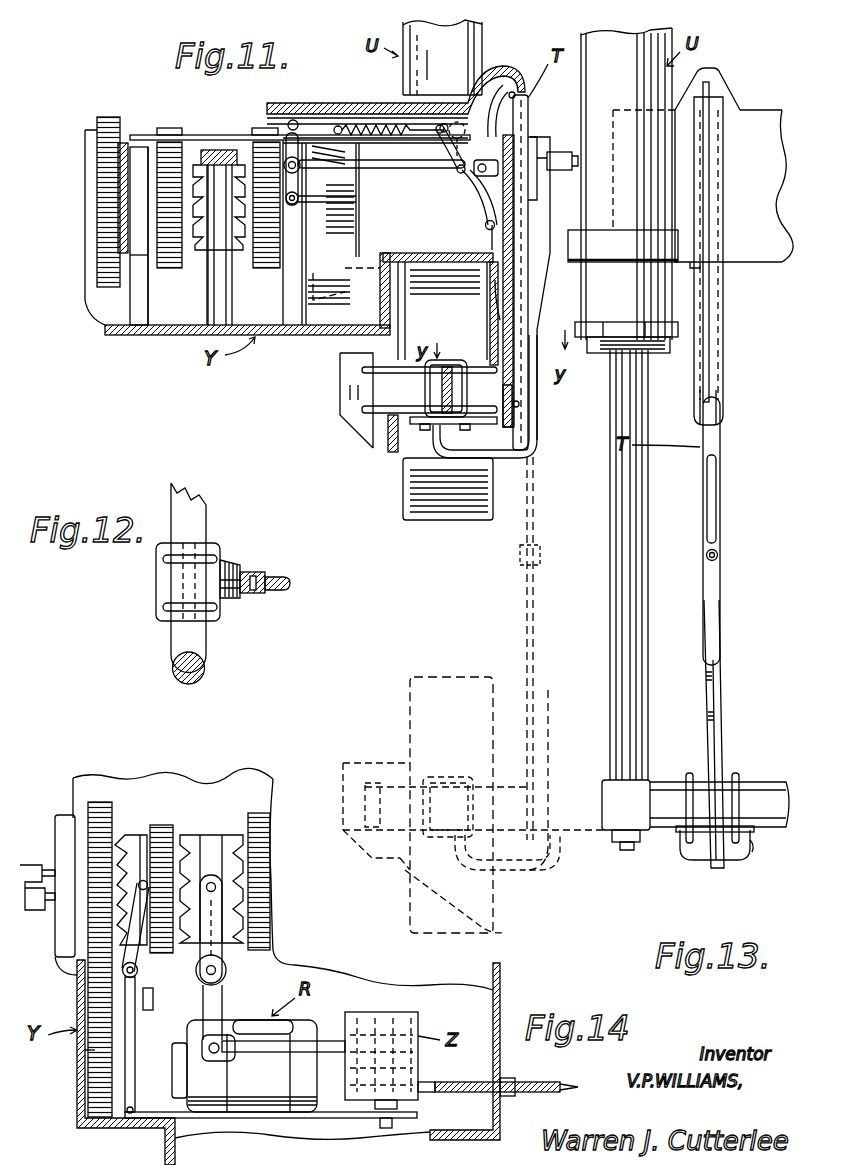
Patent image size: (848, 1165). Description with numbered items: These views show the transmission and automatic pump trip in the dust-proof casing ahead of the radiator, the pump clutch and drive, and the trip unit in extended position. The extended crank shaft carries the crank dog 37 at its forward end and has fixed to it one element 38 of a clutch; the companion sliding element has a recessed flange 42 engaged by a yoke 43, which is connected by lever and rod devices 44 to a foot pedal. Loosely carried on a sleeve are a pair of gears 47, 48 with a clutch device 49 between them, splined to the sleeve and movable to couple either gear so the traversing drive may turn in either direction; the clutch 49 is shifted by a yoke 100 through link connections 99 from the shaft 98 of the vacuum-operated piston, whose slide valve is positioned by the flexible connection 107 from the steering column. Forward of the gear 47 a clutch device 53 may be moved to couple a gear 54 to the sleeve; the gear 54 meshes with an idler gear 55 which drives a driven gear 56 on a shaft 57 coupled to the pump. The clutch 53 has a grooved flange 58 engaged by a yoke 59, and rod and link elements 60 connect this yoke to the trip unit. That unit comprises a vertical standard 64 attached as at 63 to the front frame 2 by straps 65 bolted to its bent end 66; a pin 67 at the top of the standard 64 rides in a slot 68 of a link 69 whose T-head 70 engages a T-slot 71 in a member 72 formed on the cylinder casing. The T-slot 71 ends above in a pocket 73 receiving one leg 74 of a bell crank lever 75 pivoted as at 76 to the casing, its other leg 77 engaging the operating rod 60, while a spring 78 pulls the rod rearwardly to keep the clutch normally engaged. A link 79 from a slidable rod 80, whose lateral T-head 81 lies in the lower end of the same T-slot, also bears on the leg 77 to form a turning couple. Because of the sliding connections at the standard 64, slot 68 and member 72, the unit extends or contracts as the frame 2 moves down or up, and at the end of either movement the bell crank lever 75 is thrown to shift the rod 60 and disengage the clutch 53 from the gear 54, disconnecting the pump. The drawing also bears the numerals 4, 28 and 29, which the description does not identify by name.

In FIG. 11, the front frame 2 is at (445, 387).
In FIG. 12, the front frame 2 is at (202, 520).
In FIG. 13, the front frame 2 is at (473, 853).
In FIG. 11, the box 4 is at (452, 522).
In FIG. 13, the box 4 is at (462, 680).
In FIG. 13, the nut 28 is at (622, 852).
In FIG. 13, the column 29 is at (623, 404).
In FIG. 14, the crank dog 37 is at (30, 865).
In FIG. 11, the clutch element 38 is at (359, 200).
In FIG. 11, the recessed flange 42 is at (358, 225).
In FIG. 11, the yoke 43 is at (300, 181).
In FIG. 11, the lever and rod devices 44 is at (410, 168).
In FIG. 11, the gear 47 is at (167, 135).
In FIG. 14, the gear 47 is at (163, 825).
In FIG. 11, the gear 48 is at (268, 268).
In FIG. 14, the gear 48 is at (271, 832).
In FIG. 11, the clutch device 49 is at (215, 255).
In FIG. 14, the clutch device 49 is at (205, 835).
In FIG. 11, the clutch device 53 is at (125, 143).
In FIG. 14, the clutch device 53 is at (133, 905).
In FIG. 11, the gear 54 is at (102, 117).
In FIG. 14, the gear 54 is at (100, 802).
In FIG. 14, the idler gear 55 is at (88, 1000).
In FIG. 14, the driven gear 56 is at (100, 1075).
In FIG. 14, the shaft 57 is at (160, 1065).
In FIG. 14, the grooved flange 58 is at (148, 878).
In FIG. 14, the yoke 59 is at (55, 934).
In FIG. 11, the rod and link elements 60 is at (200, 135).
In FIG. 14, the rod and link elements 60 is at (282, 1120).
In FIG. 13, the attaching means 63 is at (745, 852).
In FIG. 12, the vertical standard 64 is at (291, 585).
In FIG. 13, the vertical standard 64 is at (719, 716).
In FIG. 12, the straps 65 is at (178, 615).
In FIG. 13, the straps 65 is at (738, 775).
In FIG. 12, the bent end 66 is at (166, 580).
In FIG. 13, the bent end 66 is at (700, 860).
In FIG. 13, the pin 67 is at (720, 557).
In FIG. 13, the slot 68 is at (713, 518).
In FIG. 13, the link 69 is at (722, 457).
In FIG. 11, the T-head 70 is at (516, 92).
In FIG. 12, the T-head 70 is at (255, 576).
In FIG. 13, the T-head 70 is at (716, 408).
In FIG. 13, the T-slot 71 is at (710, 362).
In FIG. 12, the member 72 is at (265, 574).
In FIG. 13, the member 72 is at (722, 312).
In FIG. 11, the pocket 73 is at (500, 74).
In FIG. 13, the pocket 73 is at (724, 95).
In FIG. 11, the leg 74 is at (497, 104).
In FIG. 11, the bell crank lever 75 is at (451, 182).
In FIG. 11, the pivot 76 is at (492, 177).
In FIG. 11, the leg 77 is at (440, 134).
In FIG. 11, the spring 78 is at (380, 128).
In FIG. 11, the link 79 is at (477, 212).
In FIG. 11, the slidable rod 80 is at (497, 293).
In FIG. 11, the T-head 81 is at (520, 405).
In FIG. 14, the shaft 98 is at (337, 1055).
In FIG. 14, the link connections 99 is at (205, 1008).
In FIG. 14, the yoke 100 is at (225, 958).
In FIG. 14, the flexible connection 107 is at (442, 1097).